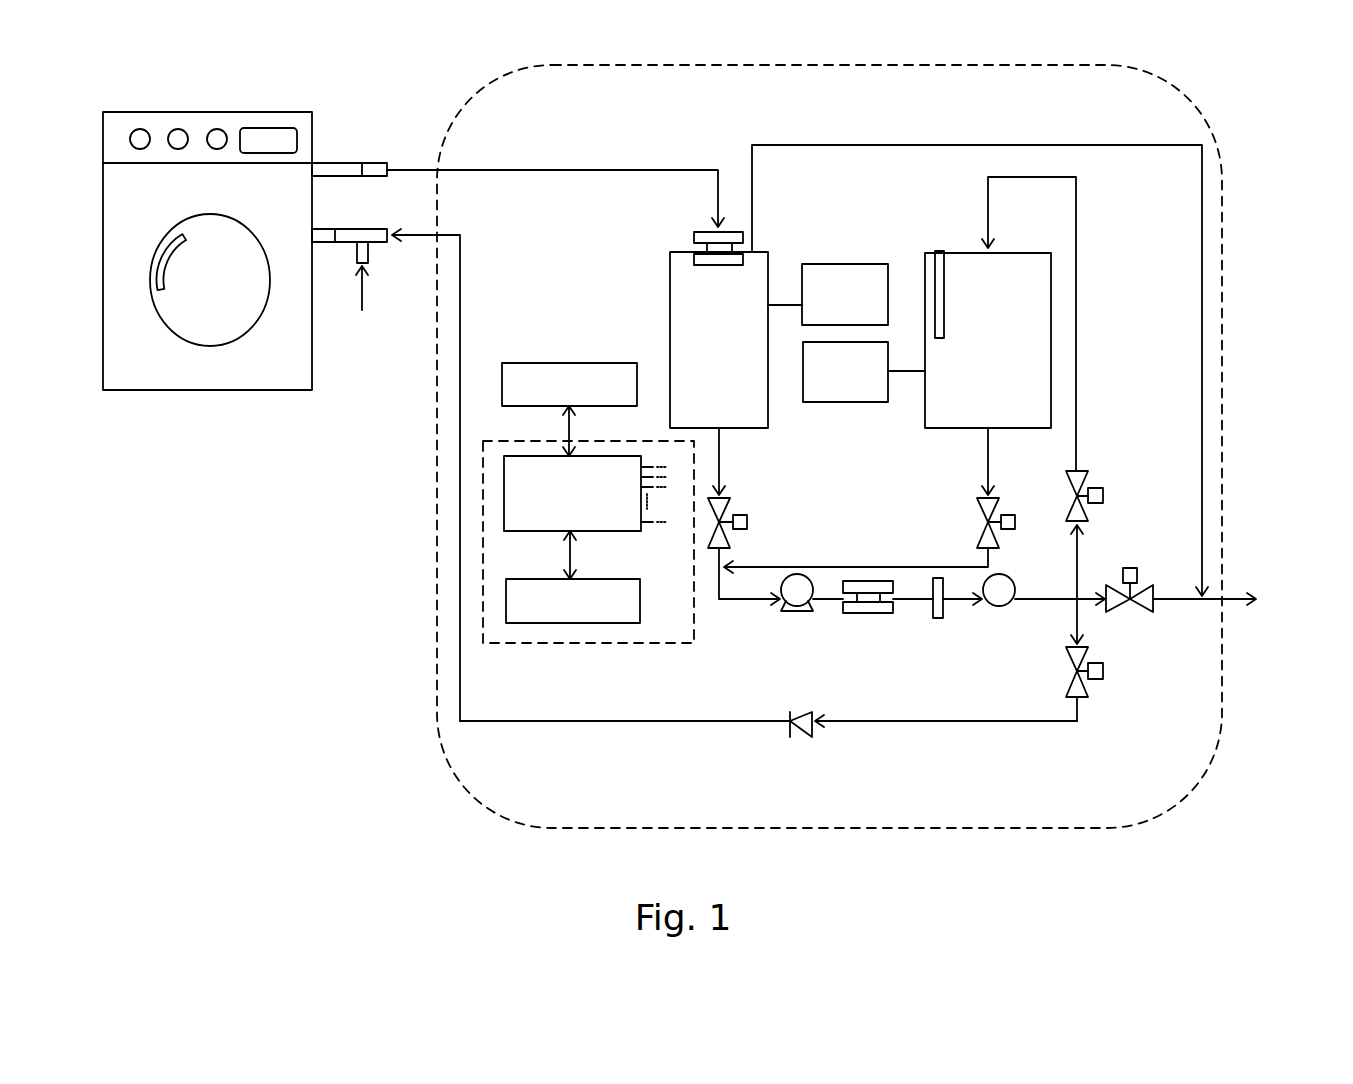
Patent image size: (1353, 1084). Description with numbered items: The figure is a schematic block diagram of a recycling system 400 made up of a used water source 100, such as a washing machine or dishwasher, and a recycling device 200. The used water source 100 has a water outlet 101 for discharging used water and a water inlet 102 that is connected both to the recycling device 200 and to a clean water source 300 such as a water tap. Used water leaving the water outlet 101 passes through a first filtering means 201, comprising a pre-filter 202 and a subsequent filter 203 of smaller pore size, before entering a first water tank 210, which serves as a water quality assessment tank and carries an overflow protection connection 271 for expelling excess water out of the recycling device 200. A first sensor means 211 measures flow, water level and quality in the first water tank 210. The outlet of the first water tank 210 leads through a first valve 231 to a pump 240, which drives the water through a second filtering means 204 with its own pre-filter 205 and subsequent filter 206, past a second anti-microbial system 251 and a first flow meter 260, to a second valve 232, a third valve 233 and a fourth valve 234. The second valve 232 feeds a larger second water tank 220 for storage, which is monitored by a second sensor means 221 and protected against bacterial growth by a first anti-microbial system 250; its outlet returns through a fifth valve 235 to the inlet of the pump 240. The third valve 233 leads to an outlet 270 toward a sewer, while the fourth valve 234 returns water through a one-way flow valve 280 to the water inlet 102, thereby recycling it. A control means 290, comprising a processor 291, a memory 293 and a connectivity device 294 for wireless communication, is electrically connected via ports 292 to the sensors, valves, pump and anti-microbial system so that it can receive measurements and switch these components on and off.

The used water source 100 is at (118, 376).
The water outlet 101 is at (351, 163).
The water inlet 102 is at (352, 229).
The recycling device 200 is at (569, 114).
The first filtering means 201 is at (674, 239).
The pre-filter 202 is at (700, 231).
The subsequent filter 203 is at (707, 267).
The second filtering means 204 is at (884, 613).
The pre-filter 205 is at (868, 615).
The subsequent filter 206 is at (855, 580).
The first water tank 210 is at (700, 360).
The first sensor means 211 is at (827, 305).
The second water tank 220 is at (974, 367).
The second sensor means 221 is at (827, 382).
The first valve 231 is at (738, 513).
The second valve 232 is at (1097, 487).
The third valve 233 is at (1130, 567).
The fourth valve 234 is at (1105, 675).
The fifth valve 235 is at (1008, 513).
The pump 240 is at (795, 612).
The first anti-microbial system 250 is at (947, 323).
The second anti-microbial system 251 is at (935, 623).
The first flow meter 260 is at (993, 612).
The outlet 270 is at (1227, 599).
The overflow protection connection 271 is at (910, 145).
The flow valve 280 is at (807, 739).
The control means 290 is at (588, 519).
The processor 291 is at (554, 503).
The ports 292 is at (647, 531).
The memory 293 is at (555, 611).
The connectivity device 294 is at (552, 395).
The clean water source 300 is at (362, 291).
The recycling system 400 is at (278, 485).